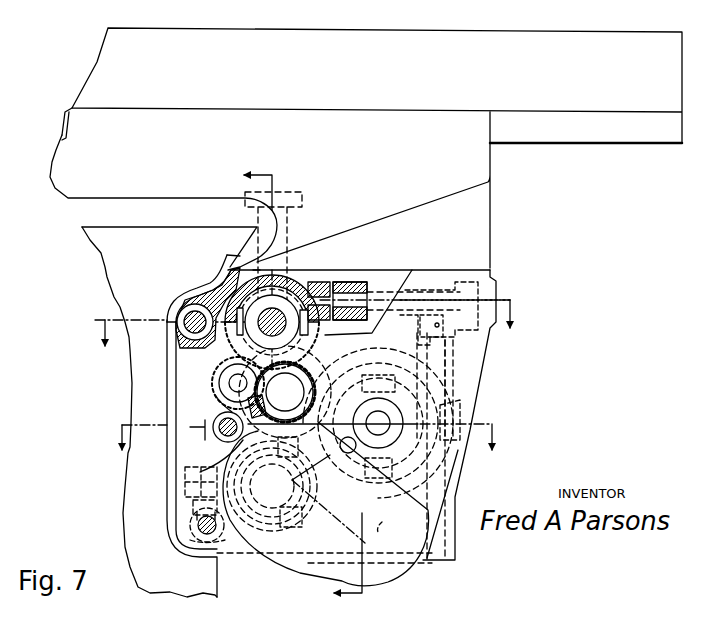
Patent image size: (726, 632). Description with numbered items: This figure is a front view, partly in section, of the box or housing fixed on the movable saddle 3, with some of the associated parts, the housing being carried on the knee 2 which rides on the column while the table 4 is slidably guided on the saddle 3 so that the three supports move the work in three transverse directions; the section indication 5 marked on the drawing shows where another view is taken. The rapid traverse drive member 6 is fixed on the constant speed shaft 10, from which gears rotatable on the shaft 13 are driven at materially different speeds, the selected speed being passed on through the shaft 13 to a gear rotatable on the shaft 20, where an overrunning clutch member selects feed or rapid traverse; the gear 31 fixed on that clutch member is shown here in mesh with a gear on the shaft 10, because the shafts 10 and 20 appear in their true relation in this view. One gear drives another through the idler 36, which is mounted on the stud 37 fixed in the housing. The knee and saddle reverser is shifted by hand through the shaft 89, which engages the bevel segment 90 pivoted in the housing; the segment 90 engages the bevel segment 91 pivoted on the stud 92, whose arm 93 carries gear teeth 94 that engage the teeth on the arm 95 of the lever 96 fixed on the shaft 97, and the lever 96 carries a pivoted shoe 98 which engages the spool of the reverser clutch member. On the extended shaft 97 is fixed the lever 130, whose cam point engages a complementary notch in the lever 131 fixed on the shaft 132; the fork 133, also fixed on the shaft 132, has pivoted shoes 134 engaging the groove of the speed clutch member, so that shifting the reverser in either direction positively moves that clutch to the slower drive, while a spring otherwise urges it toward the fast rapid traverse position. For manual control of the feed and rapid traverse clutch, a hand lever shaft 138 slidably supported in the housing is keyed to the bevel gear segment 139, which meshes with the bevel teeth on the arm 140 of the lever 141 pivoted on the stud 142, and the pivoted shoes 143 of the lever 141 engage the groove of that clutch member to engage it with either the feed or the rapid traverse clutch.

The knee 2 is at (131, 383).
The saddle 3 is at (60, 157).
The table 4 is at (100, 62).
The section line 5 is at (307, 429).
The rapid traverse drive member 6 is at (309, 318).
The shaft 10 is at (308, 364).
The shaft 13 is at (372, 418).
The shaft 20 is at (270, 478).
The gear 31 is at (383, 523).
The idler 36 is at (210, 362).
The stud 37 is at (232, 385).
The shaft 89 is at (230, 462).
The bevel segment 90 is at (245, 445).
The bevel segment 91 is at (222, 432).
The stud 92 is at (205, 432).
The arm 93 is at (215, 400).
The gear teeth 94 is at (200, 374).
The arm 95 is at (192, 348).
The lever 96 is at (326, 288).
The shaft 97 is at (378, 298).
The pivoted shoe 98 is at (222, 278).
The lever 130 is at (462, 282).
The lever 131 is at (420, 326).
The shaft 132 is at (443, 354).
The fork 133 is at (450, 415).
The pivoted shoes 134 is at (388, 378).
The shaft 138 is at (195, 540).
The bevel gear segment 139 is at (200, 522).
The arm 140 is at (205, 505).
The lever 141 is at (255, 520).
The stud 142 is at (218, 475).
The pivoted shoes 143 is at (285, 528).